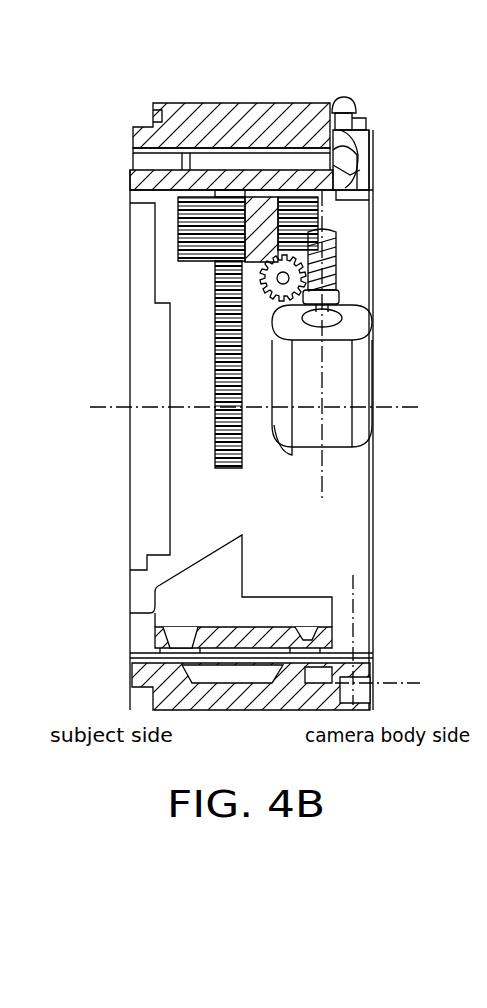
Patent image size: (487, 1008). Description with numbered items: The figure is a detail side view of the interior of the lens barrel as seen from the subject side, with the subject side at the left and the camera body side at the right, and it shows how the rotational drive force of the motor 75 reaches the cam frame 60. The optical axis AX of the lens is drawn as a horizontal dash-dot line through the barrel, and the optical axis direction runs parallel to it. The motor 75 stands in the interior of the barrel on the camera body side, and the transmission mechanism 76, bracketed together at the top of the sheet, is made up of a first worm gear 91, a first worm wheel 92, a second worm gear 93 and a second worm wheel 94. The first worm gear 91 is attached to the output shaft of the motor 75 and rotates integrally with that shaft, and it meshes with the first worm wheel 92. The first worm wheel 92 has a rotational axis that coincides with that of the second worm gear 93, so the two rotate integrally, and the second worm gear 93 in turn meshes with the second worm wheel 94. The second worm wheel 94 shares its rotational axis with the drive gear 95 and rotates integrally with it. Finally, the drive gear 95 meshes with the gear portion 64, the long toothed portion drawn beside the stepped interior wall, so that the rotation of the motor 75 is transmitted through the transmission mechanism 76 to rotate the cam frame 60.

The cam frame 60 is at (222, 185).
The gear portion 64 is at (217, 375).
The motor 75 is at (362, 420).
The transmission mechanism 76 is at (260, 46).
The first worm gear 91 is at (321, 282).
The first worm wheel 92 is at (260, 250).
The second worm gear 93 is at (302, 272).
The second worm wheel 94 is at (303, 215).
The drive gear 95 is at (180, 228).
The optical axis AX is at (110, 408).